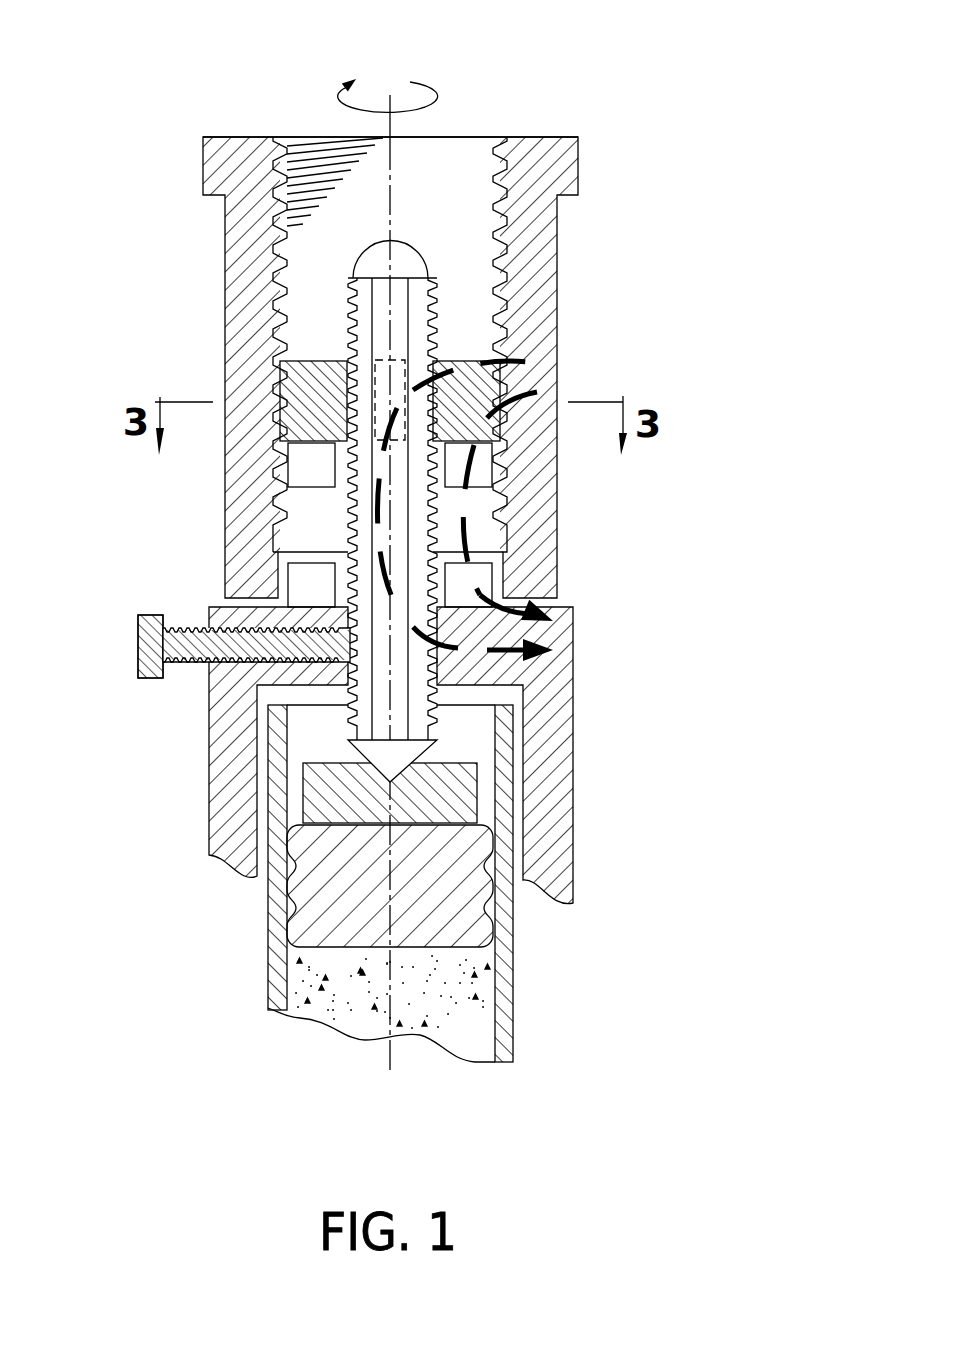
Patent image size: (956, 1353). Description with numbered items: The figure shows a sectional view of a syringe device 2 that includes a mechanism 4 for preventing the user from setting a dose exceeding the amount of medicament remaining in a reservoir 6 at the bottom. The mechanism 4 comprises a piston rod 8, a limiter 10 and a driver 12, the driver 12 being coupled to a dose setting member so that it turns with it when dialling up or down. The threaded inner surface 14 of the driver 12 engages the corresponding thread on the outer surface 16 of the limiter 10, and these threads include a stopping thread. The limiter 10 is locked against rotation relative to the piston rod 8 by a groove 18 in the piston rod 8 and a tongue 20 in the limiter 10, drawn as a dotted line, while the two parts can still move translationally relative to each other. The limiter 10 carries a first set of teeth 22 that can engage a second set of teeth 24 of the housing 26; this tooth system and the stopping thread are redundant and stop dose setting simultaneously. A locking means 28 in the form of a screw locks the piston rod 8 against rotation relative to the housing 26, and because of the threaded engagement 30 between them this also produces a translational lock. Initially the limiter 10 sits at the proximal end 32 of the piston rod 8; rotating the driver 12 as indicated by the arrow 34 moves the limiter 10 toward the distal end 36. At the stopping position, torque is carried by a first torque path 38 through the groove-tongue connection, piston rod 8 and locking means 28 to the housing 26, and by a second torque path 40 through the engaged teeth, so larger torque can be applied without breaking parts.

The syringe device 2 is at (196, 152).
The mechanism 4 is at (173, 197).
The reservoir 6 is at (323, 983).
The piston rod 8 is at (401, 476).
The limiter 10 is at (300, 395).
The driver 12 is at (540, 311).
The inner surface 14 is at (313, 158).
The outer surface 16 is at (273, 421).
The groove 18 is at (382, 302).
The tongue 20 is at (382, 380).
The first set of teeth 22 is at (300, 476).
The second set of teeth 24 is at (300, 580).
The housing 26 is at (222, 755).
The locking means 28 is at (138, 648).
The threaded engagement 30 is at (460, 665).
The proximal end 32 is at (418, 249).
The arrow 34 is at (437, 98).
The distal end 36 is at (437, 756).
The first torque path 38 is at (565, 643).
The second torque path 40 is at (563, 618).